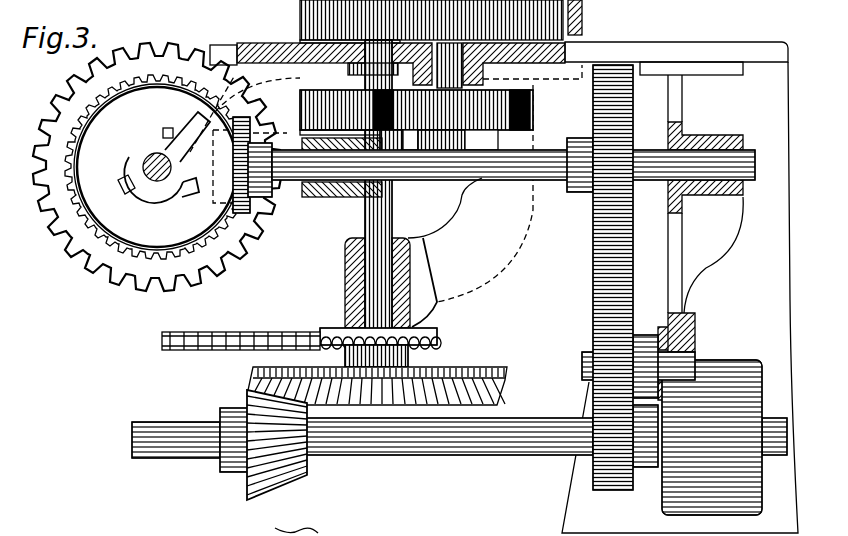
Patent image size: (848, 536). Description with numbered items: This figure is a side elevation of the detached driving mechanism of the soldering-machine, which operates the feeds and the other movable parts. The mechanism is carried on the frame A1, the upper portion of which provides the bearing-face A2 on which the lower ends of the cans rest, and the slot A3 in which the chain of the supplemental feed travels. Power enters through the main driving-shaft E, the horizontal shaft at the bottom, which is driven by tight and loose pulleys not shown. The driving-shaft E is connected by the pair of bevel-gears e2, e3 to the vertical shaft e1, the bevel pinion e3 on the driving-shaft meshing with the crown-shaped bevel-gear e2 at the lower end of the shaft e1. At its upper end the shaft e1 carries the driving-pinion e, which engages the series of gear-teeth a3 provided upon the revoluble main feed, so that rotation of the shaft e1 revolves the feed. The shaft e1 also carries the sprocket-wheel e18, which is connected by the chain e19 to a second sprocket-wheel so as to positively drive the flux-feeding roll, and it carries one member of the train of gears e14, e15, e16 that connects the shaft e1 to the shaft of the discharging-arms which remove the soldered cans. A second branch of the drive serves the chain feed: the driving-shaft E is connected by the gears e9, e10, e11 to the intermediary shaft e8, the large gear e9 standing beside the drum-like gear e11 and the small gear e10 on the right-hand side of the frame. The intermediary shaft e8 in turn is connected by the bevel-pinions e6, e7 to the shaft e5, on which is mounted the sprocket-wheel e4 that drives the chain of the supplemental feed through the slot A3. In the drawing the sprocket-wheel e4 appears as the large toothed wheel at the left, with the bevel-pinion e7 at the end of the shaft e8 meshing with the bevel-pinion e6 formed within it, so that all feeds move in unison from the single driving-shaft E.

The frame A1 is at (716, 42).
The bearing-face A2 is at (262, 44).
The slot A3 is at (230, 52).
The gear-teeth a3 is at (583, 20).
The driving-pinion e is at (300, 23).
The shaft e1 is at (392, 217).
The bevel-gear e2 is at (283, 371).
The bevel-gear e3 is at (250, 394).
The sprocket-wheel e4 is at (45, 162).
The shaft e5 is at (150, 160).
The bevel-pinion e6 is at (93, 190).
The bevel-pinion e7 is at (268, 205).
The intermediary shaft e8 is at (495, 180).
The gear e9 is at (593, 115).
The gear e10 is at (600, 352).
The gear e11 is at (614, 490).
The gear e14 is at (509, 130).
The gear e15 is at (535, 121).
The gear e16 is at (300, 113).
The sprocket-wheel e18 is at (437, 339).
The chain e19 is at (249, 332).
The main driving-shaft E is at (445, 440).